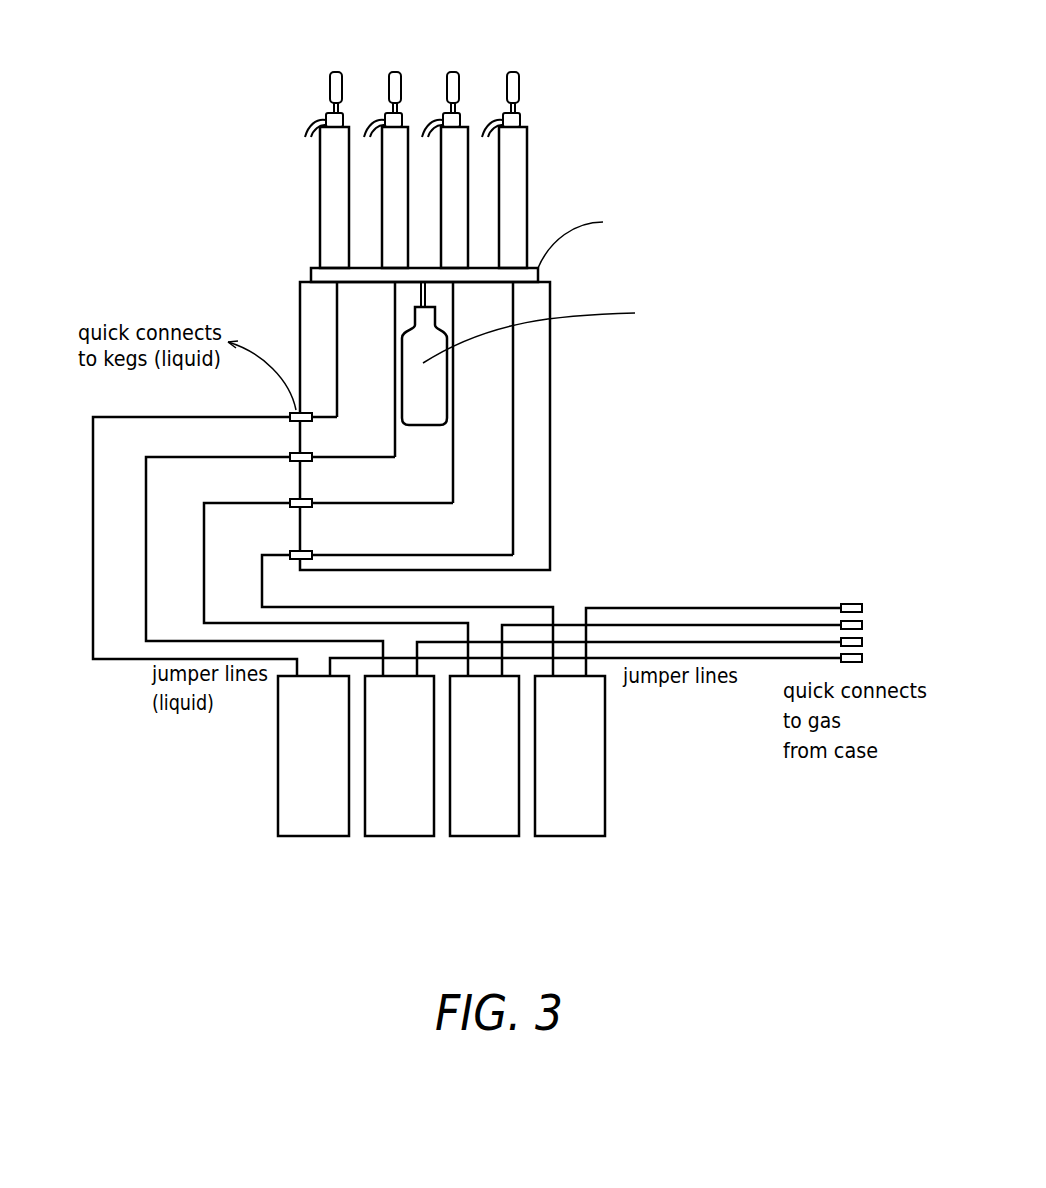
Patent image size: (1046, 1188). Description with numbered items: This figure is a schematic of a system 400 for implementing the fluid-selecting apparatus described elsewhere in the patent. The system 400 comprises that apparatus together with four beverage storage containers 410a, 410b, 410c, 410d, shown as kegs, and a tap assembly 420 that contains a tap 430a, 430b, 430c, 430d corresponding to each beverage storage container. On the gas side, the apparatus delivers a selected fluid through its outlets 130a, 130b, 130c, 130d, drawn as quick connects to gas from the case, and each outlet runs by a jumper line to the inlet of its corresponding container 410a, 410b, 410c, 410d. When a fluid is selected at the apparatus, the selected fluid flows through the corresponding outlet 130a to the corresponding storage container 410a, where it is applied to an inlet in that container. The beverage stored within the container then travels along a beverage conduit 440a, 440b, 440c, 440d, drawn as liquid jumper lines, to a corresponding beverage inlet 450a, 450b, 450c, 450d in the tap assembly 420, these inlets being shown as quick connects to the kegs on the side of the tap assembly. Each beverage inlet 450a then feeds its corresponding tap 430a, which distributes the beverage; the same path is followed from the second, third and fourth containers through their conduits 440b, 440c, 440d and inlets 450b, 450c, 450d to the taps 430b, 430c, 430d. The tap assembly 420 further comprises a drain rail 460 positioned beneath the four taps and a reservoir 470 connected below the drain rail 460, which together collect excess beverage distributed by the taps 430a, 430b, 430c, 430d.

The system 400 is at (168, 125).
The tap assembly 420 is at (300, 310).
The drain rail 460 is at (540, 280).
The reservoir 470 is at (440, 404).
The tap 430a is at (328, 93).
The tap 430b is at (388, 93).
The tap 430c is at (461, 85).
The tap 430d is at (521, 85).
The beverage inlet 450a is at (290, 414).
The beverage inlet 450b is at (290, 455).
The beverage inlet 450c is at (290, 501).
The beverage inlet 450d is at (290, 551).
The beverage conduit 440a is at (93, 592).
The beverage conduit 440b is at (146, 603).
The beverage conduit 440c is at (204, 610).
The beverage conduit 440d is at (262, 603).
The beverage storage container 410a is at (312, 836).
The beverage storage container 410b is at (400, 836).
The beverage storage container 410c is at (485, 836).
The beverage storage container 410d is at (570, 836).
The outlet 130a is at (865, 658).
The outlet 130b is at (865, 642).
The outlet 130c is at (865, 625).
The outlet 130d is at (865, 608).